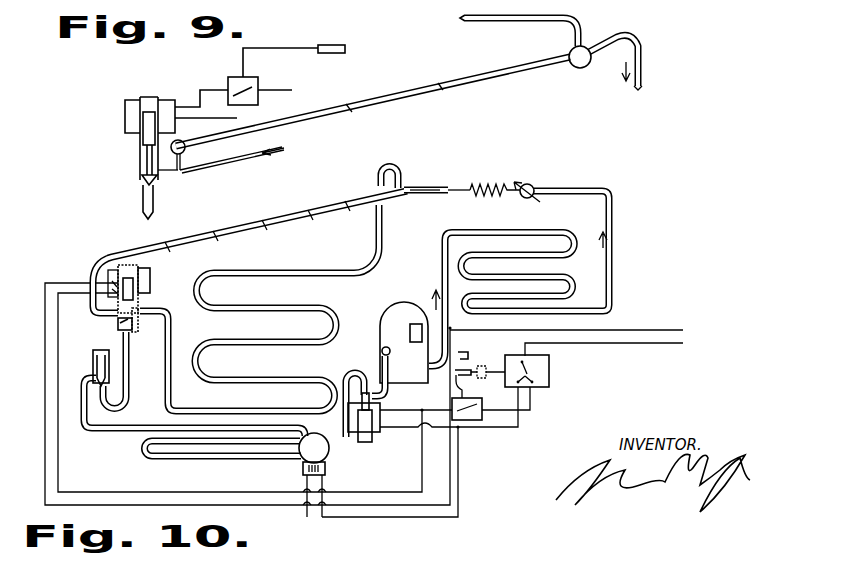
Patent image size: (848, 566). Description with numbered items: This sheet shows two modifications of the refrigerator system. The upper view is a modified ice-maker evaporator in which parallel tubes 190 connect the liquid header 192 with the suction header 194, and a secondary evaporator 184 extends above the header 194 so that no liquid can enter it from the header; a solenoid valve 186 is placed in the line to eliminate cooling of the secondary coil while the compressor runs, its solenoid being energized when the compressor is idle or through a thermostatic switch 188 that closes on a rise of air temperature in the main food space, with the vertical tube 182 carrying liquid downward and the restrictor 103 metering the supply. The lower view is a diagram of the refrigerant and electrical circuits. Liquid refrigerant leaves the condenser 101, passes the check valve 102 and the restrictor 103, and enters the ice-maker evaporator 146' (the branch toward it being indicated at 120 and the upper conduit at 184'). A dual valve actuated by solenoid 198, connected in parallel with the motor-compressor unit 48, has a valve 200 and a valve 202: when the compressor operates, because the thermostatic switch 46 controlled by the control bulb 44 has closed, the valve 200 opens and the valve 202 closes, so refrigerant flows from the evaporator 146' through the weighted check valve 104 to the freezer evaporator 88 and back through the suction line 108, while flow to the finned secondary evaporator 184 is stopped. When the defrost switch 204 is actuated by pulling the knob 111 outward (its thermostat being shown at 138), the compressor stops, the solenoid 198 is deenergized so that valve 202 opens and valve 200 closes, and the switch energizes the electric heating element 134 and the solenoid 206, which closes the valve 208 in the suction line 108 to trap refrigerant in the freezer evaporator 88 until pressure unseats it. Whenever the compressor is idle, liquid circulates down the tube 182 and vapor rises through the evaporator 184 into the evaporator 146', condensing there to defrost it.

In FIG. 9, the thermostatic switch 188 is at (228, 80).
In FIG. 9, the solenoid valve 186 is at (140, 155).
In FIG. 9, the vertical tube 182 is at (143, 203).
In FIG. 10, the vertical tube 182 is at (171, 326).
In FIG. 9, the liquid header 192 is at (180, 144).
In FIG. 9, the parallel tubes 190 is at (440, 88).
In FIG. 9, the restrictor 103 is at (222, 166).
In FIG. 10, the restrictor 103 is at (489, 186).
In FIG. 9, the conduit 184' is at (511, 31).
In FIG. 9, the suction header 194 is at (569, 50).
In FIG. 10, the check valve 102 is at (534, 186).
In FIG. 10, the condenser 101 is at (527, 272).
In FIG. 10, the conduit 120 is at (440, 260).
In FIG. 10, the ice-maker evaporator 146' is at (250, 240).
In FIG. 10, the solenoid 198 is at (140, 280).
In FIG. 10, the secondary evaporator 184 is at (259, 308).
In FIG. 10, the valve 202 is at (118, 321).
In FIG. 10, the valve 200 is at (126, 330).
In FIG. 10, the weighted check valve 104 is at (95, 355).
In FIG. 10, the suction line 108 is at (382, 352).
In FIG. 10, the motor-compressor unit 48 is at (404, 342).
In FIG. 10, the control bulb 44 is at (460, 352).
In FIG. 10, the knob 111 is at (492, 370).
In FIG. 10, the thermostat 138 is at (488, 381).
In FIG. 10, the thermostatic switch 46 is at (482, 404).
In FIG. 10, the defrost switch 204 is at (550, 366).
In FIG. 10, the valve 208 is at (370, 405).
In FIG. 10, the solenoid 206 is at (374, 430).
In FIG. 10, the electric heating element 134 is at (328, 470).
In FIG. 10, the freezer evaporator 88 is at (223, 449).